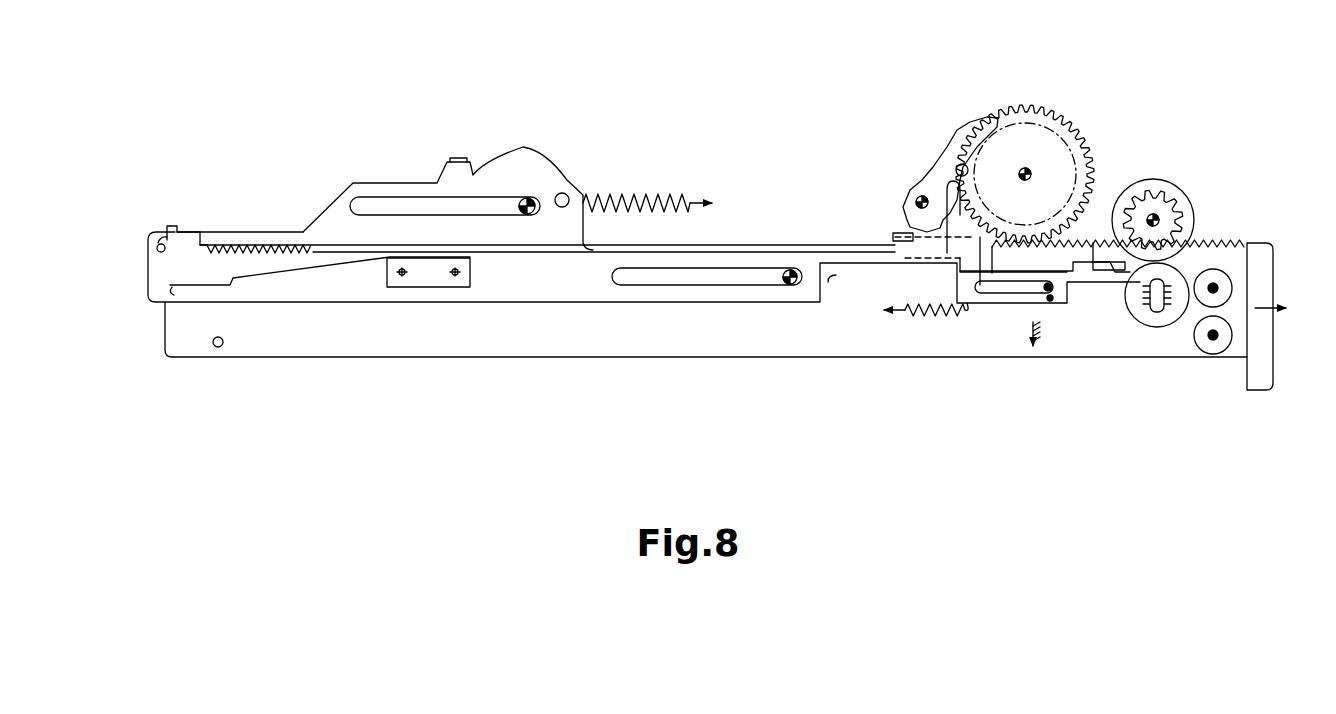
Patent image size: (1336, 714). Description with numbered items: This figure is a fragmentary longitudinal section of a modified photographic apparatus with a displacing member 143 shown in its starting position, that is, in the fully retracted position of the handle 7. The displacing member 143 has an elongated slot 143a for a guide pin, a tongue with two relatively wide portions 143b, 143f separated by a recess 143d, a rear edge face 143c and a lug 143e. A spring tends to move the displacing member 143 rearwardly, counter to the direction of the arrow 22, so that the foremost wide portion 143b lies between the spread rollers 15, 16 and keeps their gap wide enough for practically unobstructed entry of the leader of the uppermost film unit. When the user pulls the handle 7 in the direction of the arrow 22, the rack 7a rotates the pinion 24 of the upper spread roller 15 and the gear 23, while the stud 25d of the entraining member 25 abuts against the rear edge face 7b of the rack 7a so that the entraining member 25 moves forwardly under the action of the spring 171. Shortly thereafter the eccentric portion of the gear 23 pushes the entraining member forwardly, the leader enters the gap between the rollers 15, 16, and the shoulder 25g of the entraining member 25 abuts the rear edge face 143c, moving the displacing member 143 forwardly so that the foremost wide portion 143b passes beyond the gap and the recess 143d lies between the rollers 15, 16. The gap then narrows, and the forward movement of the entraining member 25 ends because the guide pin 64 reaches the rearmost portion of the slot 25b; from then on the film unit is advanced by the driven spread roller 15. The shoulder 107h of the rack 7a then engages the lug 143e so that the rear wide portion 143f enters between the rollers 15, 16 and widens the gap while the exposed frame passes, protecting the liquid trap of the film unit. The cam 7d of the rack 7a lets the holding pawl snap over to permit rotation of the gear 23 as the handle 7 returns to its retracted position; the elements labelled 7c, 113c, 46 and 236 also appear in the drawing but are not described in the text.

The handle 7 is at (1260, 368).
The rack 7a is at (646, 338).
The rear edge face 7b is at (167, 233).
The frame pin 7c is at (220, 346).
The cam 7d is at (178, 228).
The shoulder 107h is at (203, 243).
The entraining member 25 is at (538, 160).
The slot 25b is at (608, 278).
The stud 25d is at (148, 300).
The shoulder 25g is at (828, 284).
The spring 171 is at (648, 196).
The guide pin 64 is at (783, 284).
The displacing member 143 is at (1050, 301).
The elongated slot 143a is at (1002, 295).
The foremost wide portion 143b is at (1172, 266).
The rear edge face 143c is at (955, 284).
The recess 143d is at (1122, 273).
The lug 143e is at (890, 232).
The rear wide portion 143f is at (1094, 262).
The stop arm 113c is at (1025, 342).
The pawl 46 is at (925, 178).
The pawl pivot 236 is at (960, 163).
The gear 23 is at (1036, 118).
The pinion 24 is at (1158, 206).
The upper spread roller 15 is at (1172, 192).
The spread roller 16 is at (1158, 315).
The arrow 22 is at (1279, 324).